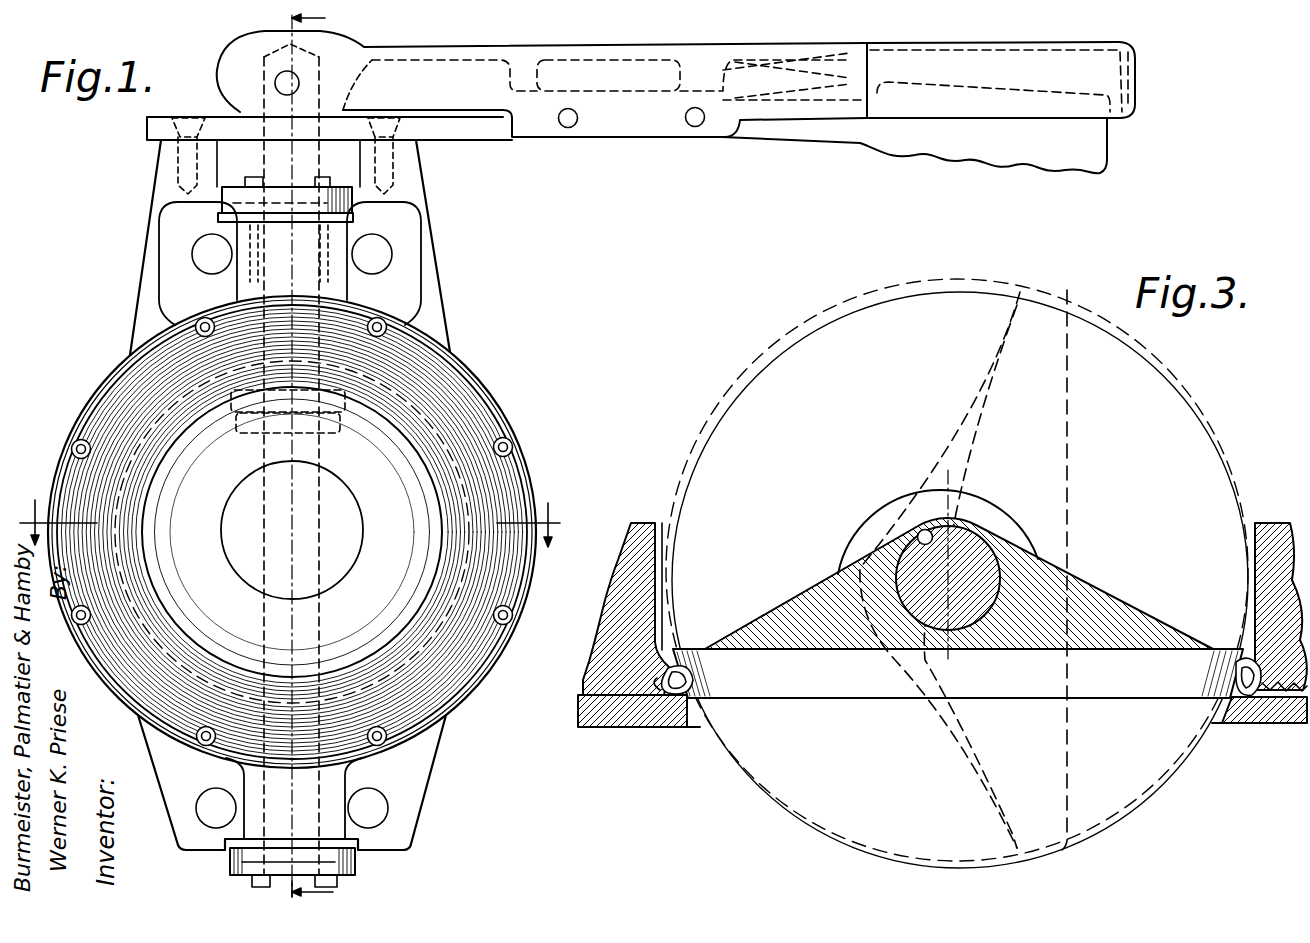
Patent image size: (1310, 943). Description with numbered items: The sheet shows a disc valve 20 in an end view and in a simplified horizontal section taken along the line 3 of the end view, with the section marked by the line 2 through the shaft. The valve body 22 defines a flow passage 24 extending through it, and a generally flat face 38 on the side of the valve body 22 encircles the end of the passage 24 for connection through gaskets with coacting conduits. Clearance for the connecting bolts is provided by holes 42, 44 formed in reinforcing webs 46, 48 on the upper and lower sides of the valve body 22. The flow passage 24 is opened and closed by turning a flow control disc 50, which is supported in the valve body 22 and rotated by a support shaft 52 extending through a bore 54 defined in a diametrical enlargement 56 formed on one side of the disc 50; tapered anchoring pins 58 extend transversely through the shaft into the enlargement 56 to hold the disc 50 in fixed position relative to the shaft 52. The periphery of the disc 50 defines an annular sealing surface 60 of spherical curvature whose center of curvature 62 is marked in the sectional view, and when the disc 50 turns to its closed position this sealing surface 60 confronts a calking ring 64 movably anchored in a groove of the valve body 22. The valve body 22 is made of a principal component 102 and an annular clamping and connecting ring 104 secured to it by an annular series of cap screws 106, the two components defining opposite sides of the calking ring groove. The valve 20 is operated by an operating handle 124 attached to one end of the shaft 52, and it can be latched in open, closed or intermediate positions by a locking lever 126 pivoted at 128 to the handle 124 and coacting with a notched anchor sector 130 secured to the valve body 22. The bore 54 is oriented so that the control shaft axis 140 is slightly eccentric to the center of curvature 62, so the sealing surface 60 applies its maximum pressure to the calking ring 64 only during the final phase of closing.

In FIG. 1, the section line 2- 2 is at (323, 457).
In FIG. 1, the line 3— 3 is at (290, 514).
In FIG. 1, the disc valve 20 is at (100, 352).
In FIG. 1, the valve body 22 is at (477, 692).
In FIG. 3, the valve body 22 is at (603, 729).
In FIG. 3, the flow passage 24 is at (663, 546).
In FIG. 1, the flat face 38 is at (113, 412).
In FIG. 1, the hole 42 is at (193, 262).
In FIG. 1, the hole 44 is at (202, 815).
In FIG. 1, the reinforcing web 46 is at (173, 243).
In FIG. 1, the reinforcing web 48 is at (188, 843).
In FIG. 1, the flow control disc 50 is at (370, 629).
In FIG. 3, the flow control disc 50 is at (797, 700).
In FIG. 1, the support shaft 52 is at (319, 160).
In FIG. 3, the support shaft 52 is at (890, 560).
In FIG. 3, the bore 54 is at (918, 532).
In FIG. 3, the diametrical enlargement 56 is at (1036, 556).
In FIG. 1, the tapered anchoring pin 58 is at (228, 418).
In FIG. 3, the annular sealing surface 60 is at (1250, 652).
In FIG. 3, the center of curvature 62 is at (968, 487).
In FIG. 3, the calking ring 64 is at (663, 660).
In FIG. 3, the principal component 102 is at (622, 557).
In FIG. 1, the clamping and connecting ring 104 is at (478, 395).
In FIG. 3, the clamping and connecting ring 104 is at (667, 718).
In FIG. 1, the cap screw 106 is at (510, 440).
In FIG. 1, the operating handle 124 is at (693, 47).
In FIG. 1, the locking lever 126 is at (920, 160).
In FIG. 1, the pivot 128 is at (690, 127).
In FIG. 1, the notched anchor sector 130 is at (470, 140).
In FIG. 3, the control shaft axis 140 is at (988, 684).